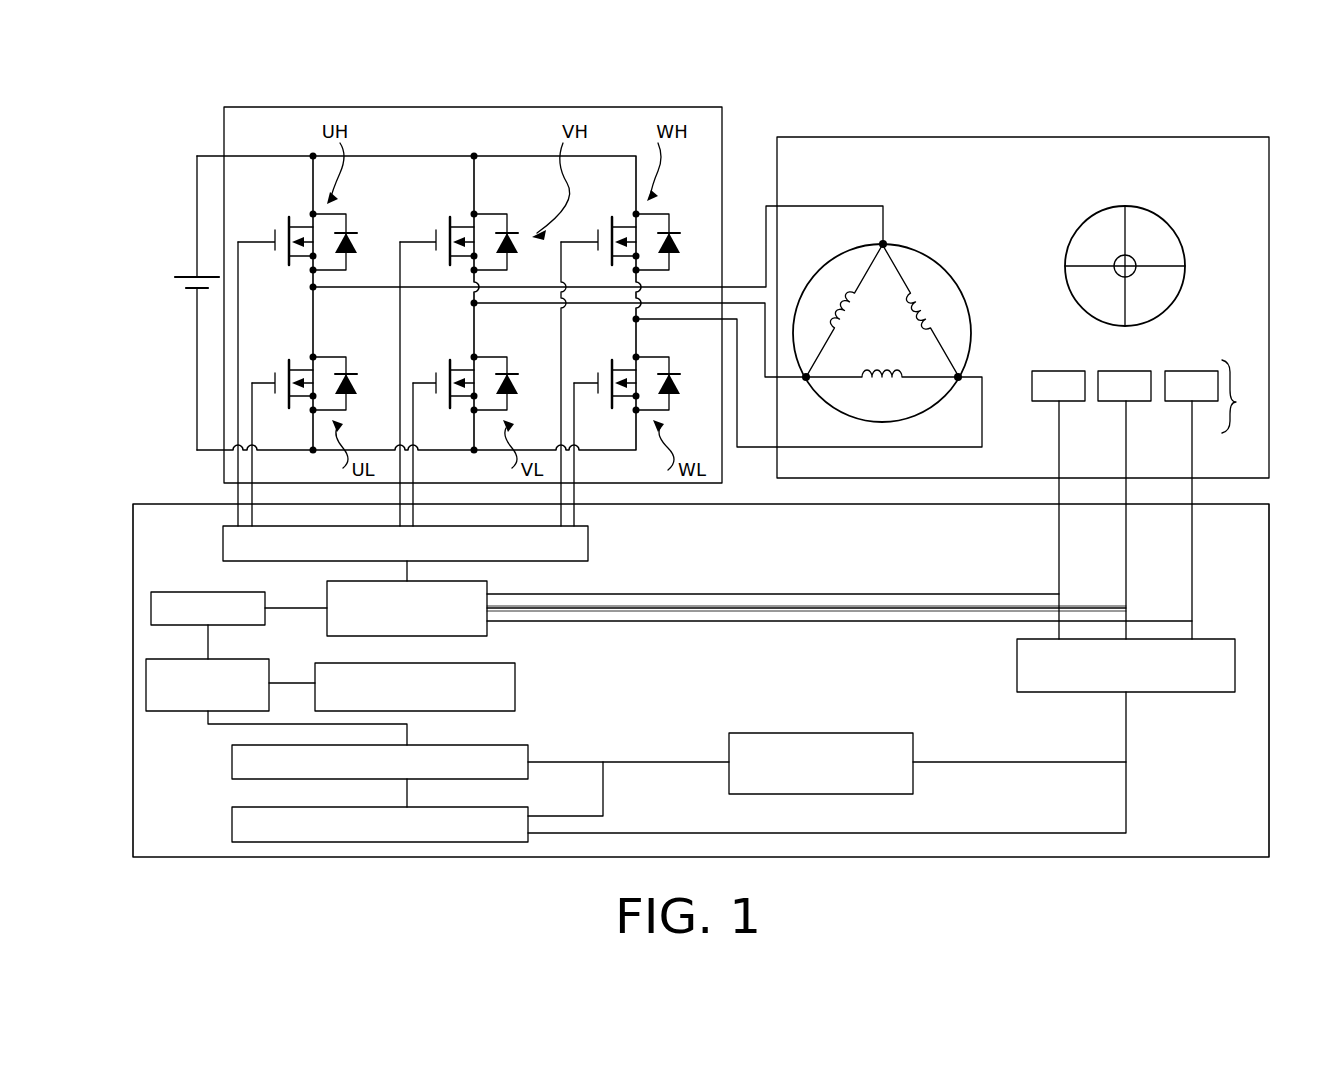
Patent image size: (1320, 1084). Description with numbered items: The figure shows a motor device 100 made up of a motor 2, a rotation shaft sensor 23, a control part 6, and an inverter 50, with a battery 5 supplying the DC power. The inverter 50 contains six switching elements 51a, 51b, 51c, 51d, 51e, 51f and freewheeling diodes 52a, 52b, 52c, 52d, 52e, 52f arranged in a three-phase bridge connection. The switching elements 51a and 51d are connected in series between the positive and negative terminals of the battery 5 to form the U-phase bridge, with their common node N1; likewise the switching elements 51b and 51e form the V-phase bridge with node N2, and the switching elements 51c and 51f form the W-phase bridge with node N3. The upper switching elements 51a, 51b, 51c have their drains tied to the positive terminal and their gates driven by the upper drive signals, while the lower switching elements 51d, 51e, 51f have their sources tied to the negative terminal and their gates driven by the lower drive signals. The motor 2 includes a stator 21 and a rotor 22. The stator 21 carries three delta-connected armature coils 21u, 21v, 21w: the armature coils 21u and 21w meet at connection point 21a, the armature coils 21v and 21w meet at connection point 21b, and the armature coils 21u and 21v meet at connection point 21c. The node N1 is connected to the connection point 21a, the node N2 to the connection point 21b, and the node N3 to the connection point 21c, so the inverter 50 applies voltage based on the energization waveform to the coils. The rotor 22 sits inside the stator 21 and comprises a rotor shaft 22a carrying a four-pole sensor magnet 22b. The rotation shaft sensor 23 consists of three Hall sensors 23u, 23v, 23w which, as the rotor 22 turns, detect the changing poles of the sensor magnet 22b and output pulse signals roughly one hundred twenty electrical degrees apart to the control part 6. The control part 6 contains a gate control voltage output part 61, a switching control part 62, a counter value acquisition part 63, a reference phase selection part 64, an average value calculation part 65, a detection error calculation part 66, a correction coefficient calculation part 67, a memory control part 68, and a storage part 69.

The motor device 100 is at (841, 116).
The motor 2 is at (1018, 137).
The battery 5 is at (188, 271).
The control part 6 is at (183, 503).
The inverter 50 is at (600, 107).
The switching element 51a is at (288, 218).
The switching element 51b is at (449, 218).
The switching element 51c is at (611, 218).
The switching element 51d is at (280, 395).
The switching element 51e is at (442, 395).
The switching element 51f is at (604, 395).
The diode 52a is at (350, 229).
The diode 52b is at (512, 229).
The diode 52c is at (674, 229).
The diode 52d is at (350, 369).
The diode 52e is at (512, 369).
The diode 52f is at (676, 382).
The node N1 is at (310, 287).
The node N2 is at (474, 303).
The node N3 is at (636, 319).
The stator 21 is at (935, 257).
The connection point 21a is at (886, 242).
The connection point 21b is at (805, 382).
The connection point 21c is at (960, 376).
The armature coil 21u is at (930, 306).
The armature coil 21v is at (886, 388).
The armature coil 21w is at (839, 302).
The rotor 22 is at (1173, 210).
The rotor shaft 22a is at (1136, 263).
The sensor magnet 22b is at (1145, 216).
The rotation shaft sensor 23 is at (1241, 396).
The Hall sensor 23u is at (1048, 401).
The Hall sensor 23v is at (1116, 401).
The Hall sensor 23w is at (1184, 401).
The gate control voltage output part 61 is at (590, 550).
The switching control part 62 is at (327, 598).
The counter value acquisition part 63 is at (1210, 639).
The reference phase selection part 64 is at (885, 733).
The average value calculation part 65 is at (502, 808).
The detection error calculation part 66 is at (502, 748).
The correction coefficient calculation part 67 is at (493, 665).
The memory control part 68 is at (248, 661).
The storage part 69 is at (228, 593).